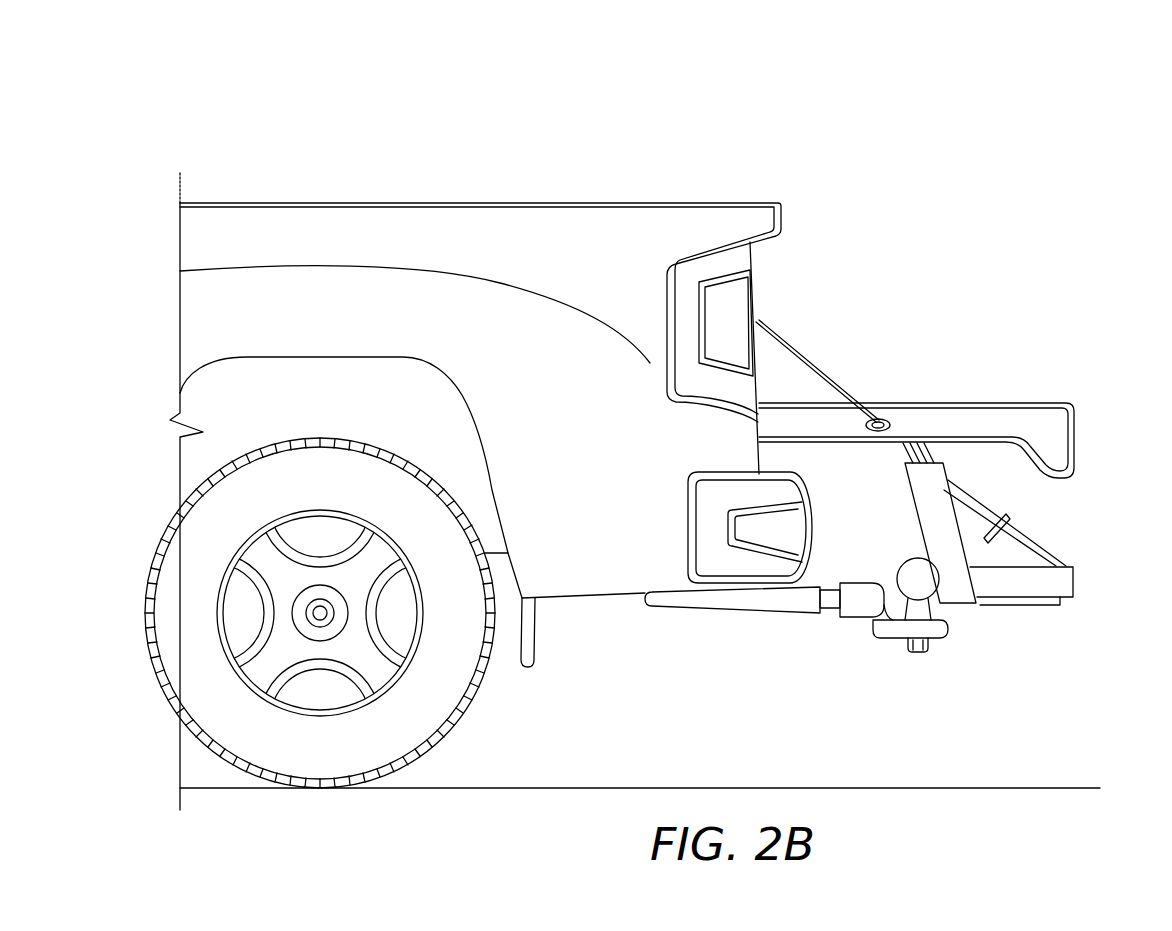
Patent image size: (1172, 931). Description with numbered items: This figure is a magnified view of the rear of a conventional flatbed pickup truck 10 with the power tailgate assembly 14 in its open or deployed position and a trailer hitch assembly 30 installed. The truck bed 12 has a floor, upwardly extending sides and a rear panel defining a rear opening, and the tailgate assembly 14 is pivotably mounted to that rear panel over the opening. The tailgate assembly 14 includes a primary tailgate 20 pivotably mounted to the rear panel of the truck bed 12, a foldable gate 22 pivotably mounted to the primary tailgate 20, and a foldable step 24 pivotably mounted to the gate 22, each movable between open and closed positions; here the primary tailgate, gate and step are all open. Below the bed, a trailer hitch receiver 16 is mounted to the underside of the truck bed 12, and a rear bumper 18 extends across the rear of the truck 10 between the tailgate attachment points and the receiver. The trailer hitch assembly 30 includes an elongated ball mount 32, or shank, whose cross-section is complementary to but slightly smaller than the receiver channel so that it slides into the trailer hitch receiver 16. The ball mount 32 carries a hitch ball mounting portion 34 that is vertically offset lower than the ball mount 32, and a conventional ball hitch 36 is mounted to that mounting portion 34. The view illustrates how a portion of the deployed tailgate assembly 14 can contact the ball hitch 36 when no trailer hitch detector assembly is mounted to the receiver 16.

The truck 10 is at (896, 174).
The truck bed 12 is at (508, 192).
The power tailgate assembly 14 is at (1058, 383).
The trailer hitch receiver 16 is at (762, 612).
The rear bumper 18 is at (812, 545).
The primary tailgate 20 is at (940, 403).
The foldable gate 22 is at (916, 512).
The foldable step 24 is at (1062, 600).
The trailer hitch assembly 30 is at (895, 650).
The ball mount 32 is at (833, 617).
The hitch ball mounting portion 34 is at (943, 640).
The ball hitch 36 is at (897, 572).